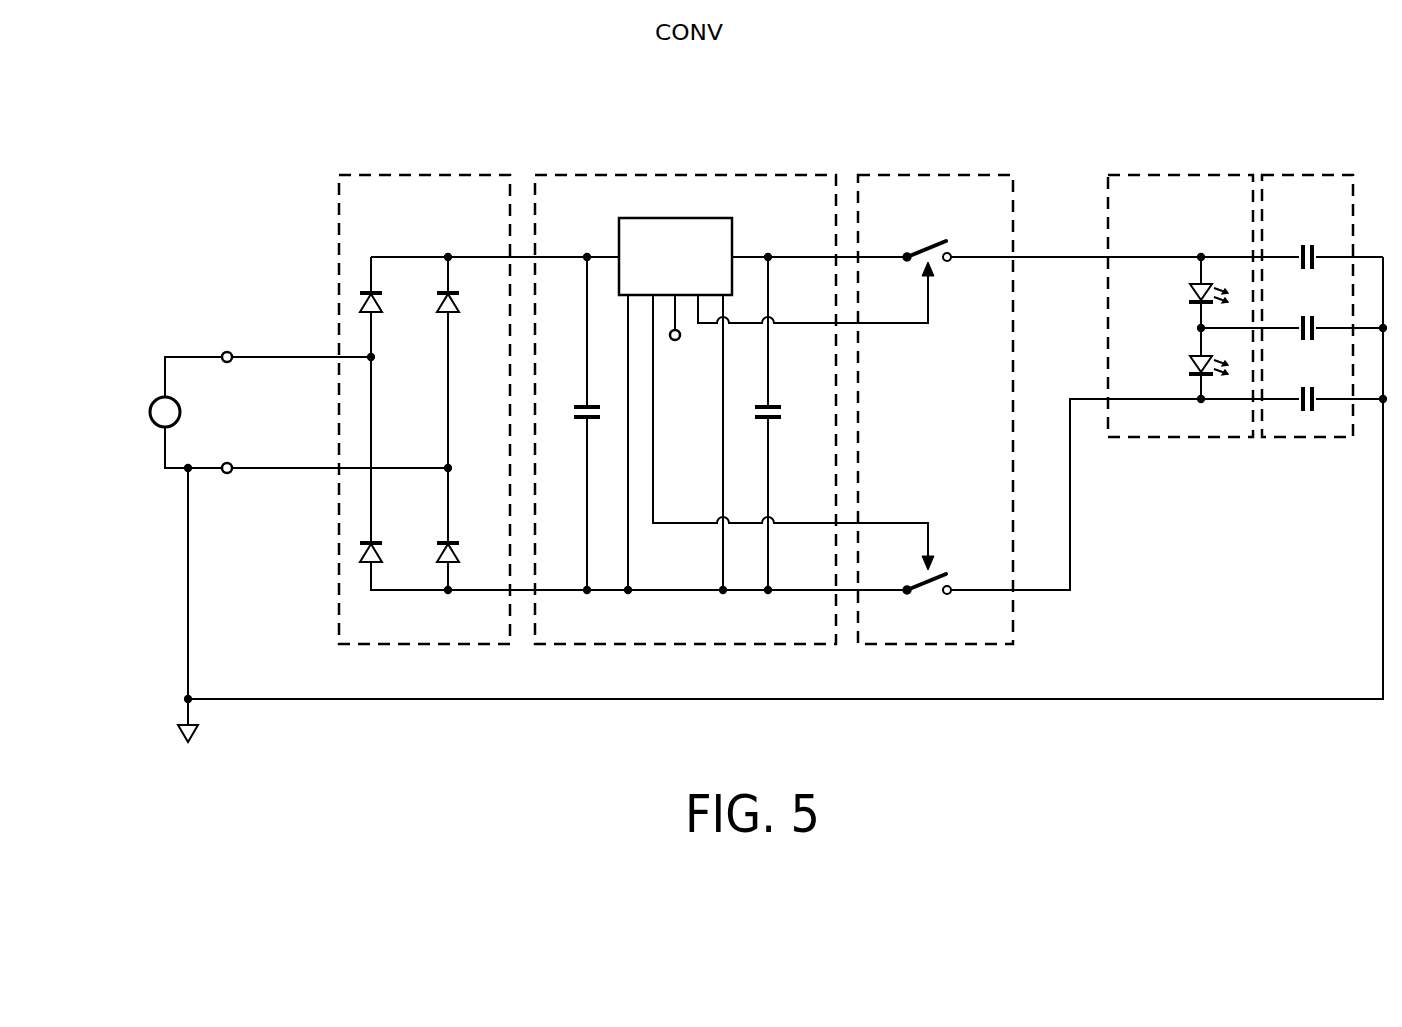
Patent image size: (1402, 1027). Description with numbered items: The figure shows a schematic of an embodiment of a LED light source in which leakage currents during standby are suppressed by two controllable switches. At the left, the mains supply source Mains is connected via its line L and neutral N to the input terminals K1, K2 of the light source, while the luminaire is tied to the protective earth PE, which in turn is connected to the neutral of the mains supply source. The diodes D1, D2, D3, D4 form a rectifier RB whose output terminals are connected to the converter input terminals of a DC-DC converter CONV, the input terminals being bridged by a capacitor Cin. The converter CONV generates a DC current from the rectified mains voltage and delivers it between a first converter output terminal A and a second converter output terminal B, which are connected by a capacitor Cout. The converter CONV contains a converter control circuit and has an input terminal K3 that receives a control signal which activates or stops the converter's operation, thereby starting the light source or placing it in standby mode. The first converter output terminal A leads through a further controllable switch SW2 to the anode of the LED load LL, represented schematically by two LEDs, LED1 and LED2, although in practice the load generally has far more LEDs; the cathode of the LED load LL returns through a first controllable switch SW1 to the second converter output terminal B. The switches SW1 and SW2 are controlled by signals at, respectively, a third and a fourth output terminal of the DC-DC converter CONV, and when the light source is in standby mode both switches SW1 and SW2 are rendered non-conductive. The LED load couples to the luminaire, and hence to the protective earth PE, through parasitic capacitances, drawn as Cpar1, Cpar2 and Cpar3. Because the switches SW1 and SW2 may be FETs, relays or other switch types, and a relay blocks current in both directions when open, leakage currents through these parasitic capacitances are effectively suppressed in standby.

The mains supply source Mains is at (151, 412).
The input terminal K1 is at (224, 343).
The input terminal K2 is at (224, 455).
The input terminal K3 is at (672, 335).
The line conductor L is at (303, 345).
The neutral conductor N is at (318, 457).
The protective earth PE is at (782, 499).
The rectifier RB is at (623, 378).
The diode D1 is at (386, 302).
The diode D2 is at (463, 302).
The diode D3 is at (386, 552).
The diode D4 is at (463, 552).
The DC-DC converter CONV is at (734, 378).
The capacitor Cin is at (570, 424).
The capacitor Cout is at (786, 424).
The first converter output terminal A is at (766, 240).
The second converter output terminal B is at (768, 614).
The first controllable switch SW1 is at (1050, 514).
The further controllable switch SW2 is at (1050, 237).
The LED load LL is at (1203, 275).
The LED LED1 is at (1177, 296).
The LED LED2 is at (1177, 367).
The parasitic capacitance Cpar1 is at (1329, 244).
The parasitic capacitance Cpar2 is at (1329, 314).
The parasitic capacitance Cpar3 is at (1329, 385).